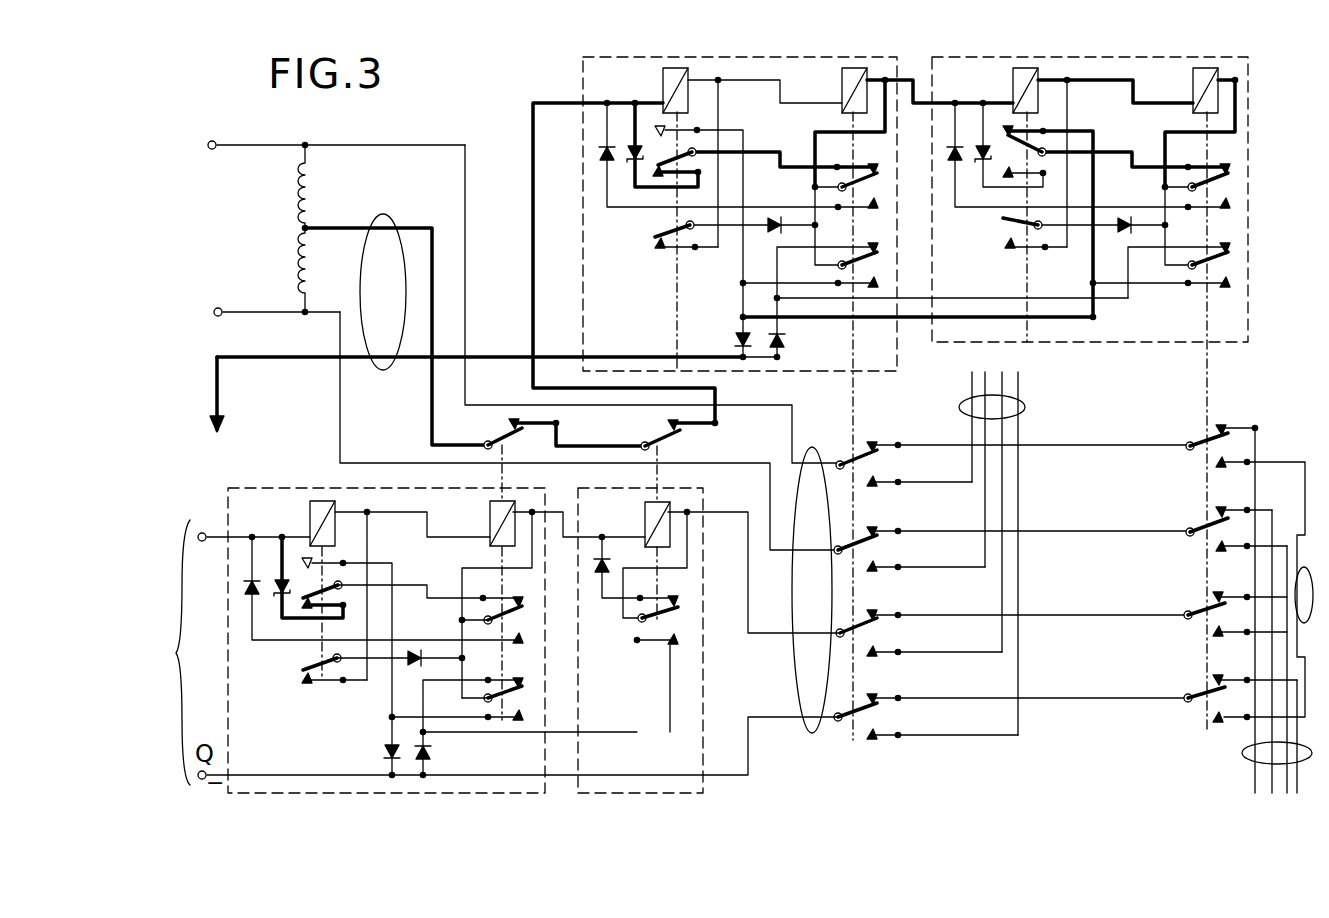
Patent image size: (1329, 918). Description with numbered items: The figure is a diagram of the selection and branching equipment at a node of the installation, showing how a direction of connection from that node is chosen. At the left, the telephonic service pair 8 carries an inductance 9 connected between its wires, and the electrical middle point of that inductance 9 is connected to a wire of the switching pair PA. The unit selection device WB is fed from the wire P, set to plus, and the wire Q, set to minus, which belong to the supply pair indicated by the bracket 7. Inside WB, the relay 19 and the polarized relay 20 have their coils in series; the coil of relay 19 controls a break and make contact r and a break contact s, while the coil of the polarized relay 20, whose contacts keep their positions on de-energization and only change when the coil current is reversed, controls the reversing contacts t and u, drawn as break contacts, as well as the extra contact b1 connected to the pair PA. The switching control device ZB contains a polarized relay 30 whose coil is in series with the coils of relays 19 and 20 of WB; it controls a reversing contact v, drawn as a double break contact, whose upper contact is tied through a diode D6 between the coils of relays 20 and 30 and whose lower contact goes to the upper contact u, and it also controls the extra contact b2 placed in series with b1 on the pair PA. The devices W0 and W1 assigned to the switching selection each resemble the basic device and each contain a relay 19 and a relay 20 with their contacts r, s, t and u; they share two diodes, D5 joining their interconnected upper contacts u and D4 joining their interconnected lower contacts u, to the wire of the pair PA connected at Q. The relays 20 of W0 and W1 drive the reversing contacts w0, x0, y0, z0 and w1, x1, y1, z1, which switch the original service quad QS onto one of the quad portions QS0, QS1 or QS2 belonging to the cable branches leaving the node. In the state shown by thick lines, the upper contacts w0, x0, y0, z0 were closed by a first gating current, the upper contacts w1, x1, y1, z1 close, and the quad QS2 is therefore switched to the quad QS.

The DC supply terminals P, Q 7 is at (176, 652).
The telephonic service pair 8 is at (206, 140).
The inductance 9 is at (287, 175).
The relay 19 is at (660, 80).
The polarized relay 20 is at (841, 81).
The polarized relay 30 is at (644, 514).
The switching pair PA is at (385, 213).
The unit selection device WB is at (254, 492).
The switching selection device W0 is at (573, 89).
The switching selection device W1 is at (1238, 151).
The switching control device ZB is at (688, 722).
The diode D4 is at (785, 340).
The diode D5 is at (735, 336).
The diode D6 is at (598, 580).
The extra contact b1 is at (502, 432).
The extra contact b2 is at (654, 433).
The break and make contact r is at (662, 153).
The break contact s is at (652, 228).
The reversing contact t is at (868, 185).
The reversing contact u is at (865, 265).
The reversing contact v is at (668, 623).
The reversing contact w0 is at (880, 468).
The reversing contact x0 is at (880, 553).
The reversing contact y0 is at (880, 636).
The reversing contact z0 is at (880, 719).
The reversing contact w1 is at (1188, 442).
The reversing contact x1 is at (1188, 527).
The reversing contact y1 is at (1188, 611).
The reversing contact z1 is at (1188, 695).
The original service quad QS is at (840, 426).
The quad portion QS0 is at (1070, 393).
The quad portion QS1 is at (1301, 565).
The quad portion QS2 is at (1243, 758).
The wire P is at (207, 537).
The wire Q is at (228, 400).